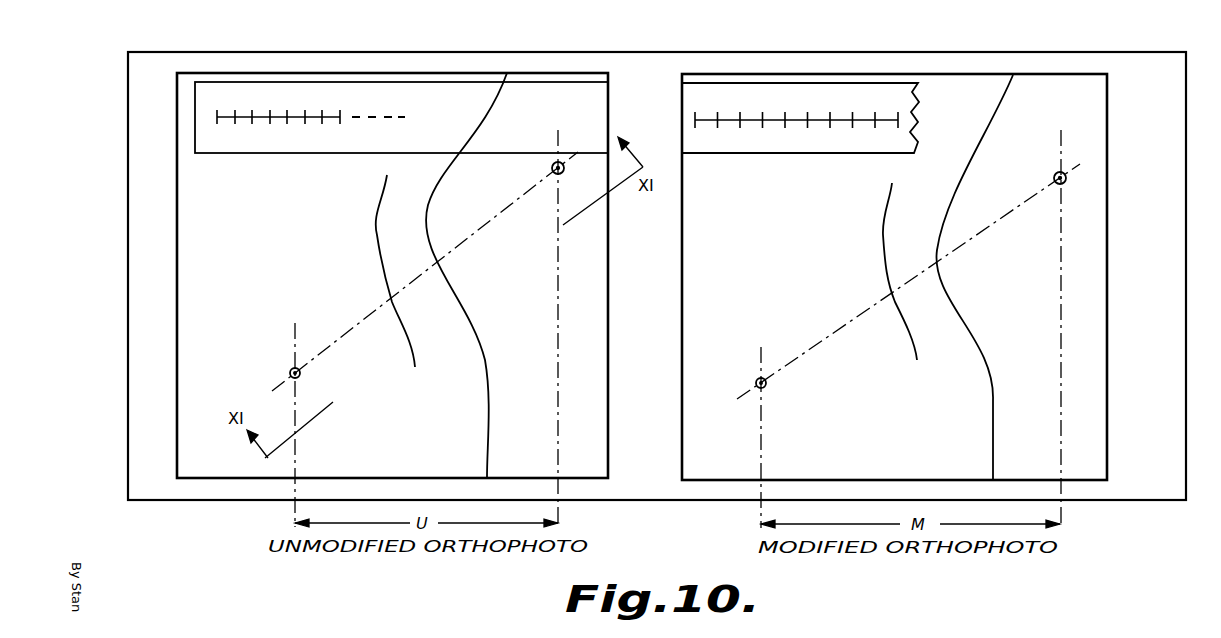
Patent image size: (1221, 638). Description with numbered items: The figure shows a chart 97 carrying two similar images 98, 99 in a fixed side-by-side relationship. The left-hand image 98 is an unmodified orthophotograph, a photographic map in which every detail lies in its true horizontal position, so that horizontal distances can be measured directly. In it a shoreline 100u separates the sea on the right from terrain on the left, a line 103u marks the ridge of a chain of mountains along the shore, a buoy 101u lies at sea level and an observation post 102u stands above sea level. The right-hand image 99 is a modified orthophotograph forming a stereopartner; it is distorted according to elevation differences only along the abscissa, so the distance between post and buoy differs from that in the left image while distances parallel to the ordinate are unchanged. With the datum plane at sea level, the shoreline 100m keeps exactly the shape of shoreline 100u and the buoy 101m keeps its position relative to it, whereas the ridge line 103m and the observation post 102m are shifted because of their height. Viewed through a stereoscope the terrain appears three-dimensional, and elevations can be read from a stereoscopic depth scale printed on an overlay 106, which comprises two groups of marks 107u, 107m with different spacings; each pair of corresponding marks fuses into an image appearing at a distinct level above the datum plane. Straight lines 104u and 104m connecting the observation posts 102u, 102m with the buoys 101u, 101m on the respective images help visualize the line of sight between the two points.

The chart 97 is at (137, 475).
The left-hand image 98 is at (185, 345).
The right-hand image 99 is at (1085, 272).
The shoreline 100u is at (440, 186).
The shoreline 100m is at (952, 318).
The buoy 101u is at (563, 162).
The buoy 101m is at (1064, 172).
The observation post 102u is at (291, 371).
The observation post 102m is at (764, 377).
The ridge line 103u is at (381, 292).
The ridge line 103m is at (882, 262).
The straight line 104u is at (346, 338).
The straight line 104m is at (816, 344).
The overlay 106 is at (217, 141).
The group of marks 107u is at (300, 122).
The group of marks 107m is at (796, 122).